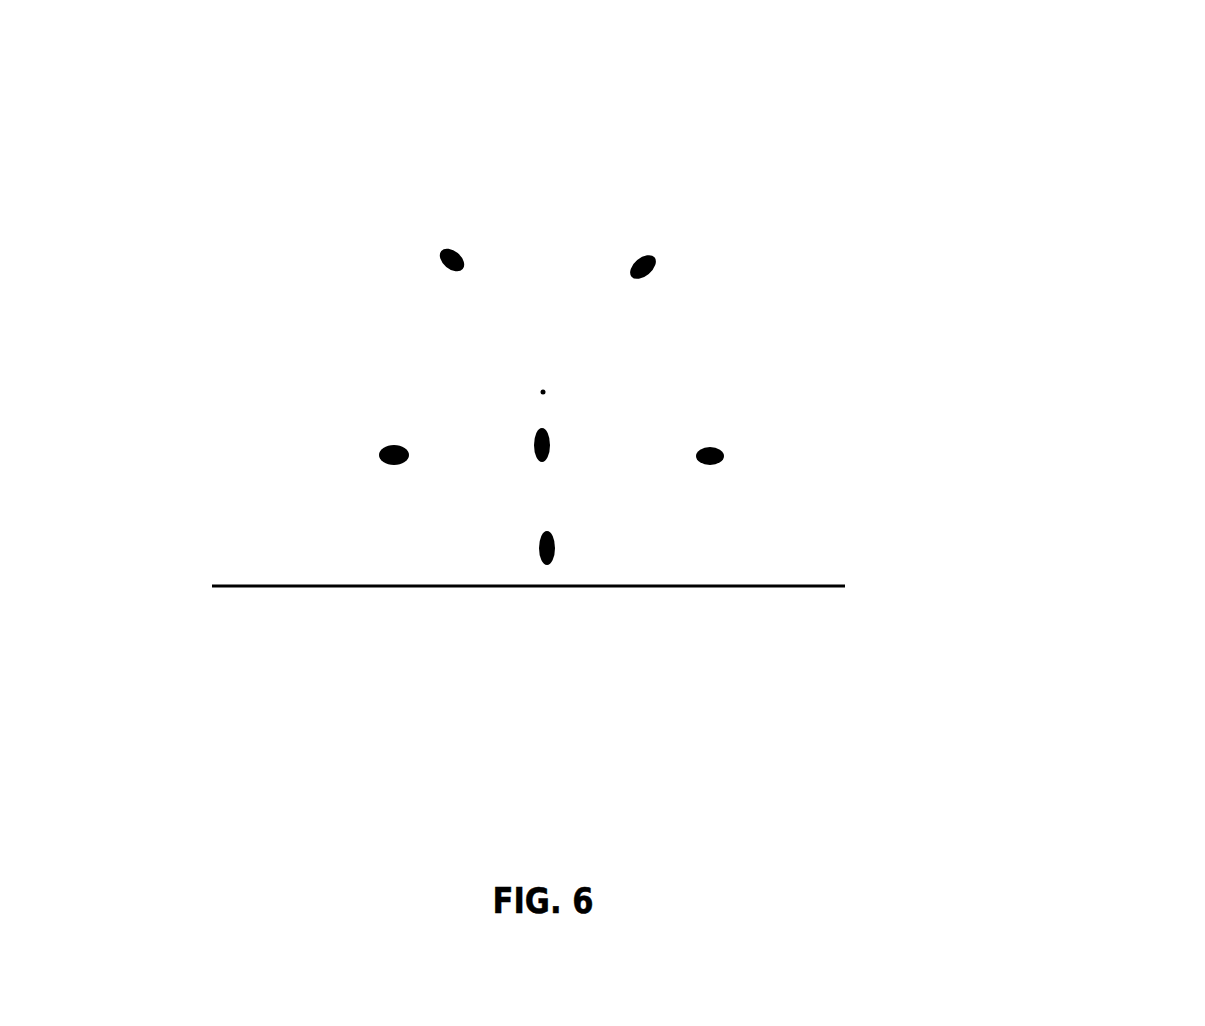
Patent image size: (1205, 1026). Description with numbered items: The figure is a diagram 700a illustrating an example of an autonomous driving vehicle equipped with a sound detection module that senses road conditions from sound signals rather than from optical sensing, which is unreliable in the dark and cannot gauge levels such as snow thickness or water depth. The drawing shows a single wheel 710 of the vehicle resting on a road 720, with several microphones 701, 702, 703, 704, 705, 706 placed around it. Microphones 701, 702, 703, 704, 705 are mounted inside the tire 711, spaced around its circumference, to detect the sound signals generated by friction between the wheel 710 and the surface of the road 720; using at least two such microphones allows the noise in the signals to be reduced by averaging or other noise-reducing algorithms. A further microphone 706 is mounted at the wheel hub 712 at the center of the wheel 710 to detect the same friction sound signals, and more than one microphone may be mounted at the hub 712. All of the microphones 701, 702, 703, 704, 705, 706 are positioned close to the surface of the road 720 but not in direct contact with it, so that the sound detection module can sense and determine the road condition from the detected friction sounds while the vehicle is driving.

The diagram 700a is at (757, 302).
The microphone 701 is at (545, 558).
The microphone 702 is at (390, 455).
The microphone 703 is at (447, 255).
The microphone 704 is at (655, 260).
The microphone 705 is at (722, 455).
The microphone 706 is at (537, 450).
The wheel 710 is at (390, 357).
The tire 711 is at (395, 275).
The wheel hub 712 is at (573, 405).
The road 720 is at (375, 587).